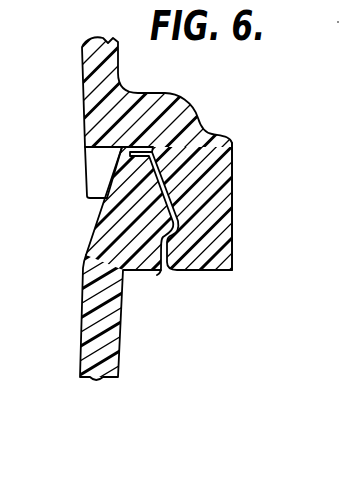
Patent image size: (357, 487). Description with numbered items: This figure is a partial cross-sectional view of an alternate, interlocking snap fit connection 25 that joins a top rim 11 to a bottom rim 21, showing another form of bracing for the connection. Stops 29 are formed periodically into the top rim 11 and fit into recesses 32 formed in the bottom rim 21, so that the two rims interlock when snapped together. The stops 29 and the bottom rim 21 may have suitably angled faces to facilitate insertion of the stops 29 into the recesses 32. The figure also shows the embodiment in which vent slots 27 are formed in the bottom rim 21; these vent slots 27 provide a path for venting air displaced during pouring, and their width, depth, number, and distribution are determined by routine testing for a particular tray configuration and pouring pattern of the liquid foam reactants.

The snap fit connection 25 is at (222, 106).
The top rim 11 is at (232, 144).
The stops 29 is at (102, 163).
The bottom rim 21 is at (123, 237).
The recesses 32 is at (110, 172).
The vent slots 27 is at (163, 275).